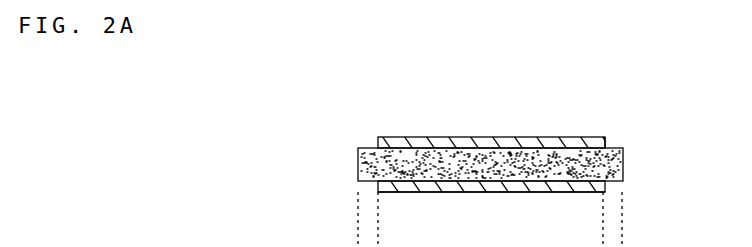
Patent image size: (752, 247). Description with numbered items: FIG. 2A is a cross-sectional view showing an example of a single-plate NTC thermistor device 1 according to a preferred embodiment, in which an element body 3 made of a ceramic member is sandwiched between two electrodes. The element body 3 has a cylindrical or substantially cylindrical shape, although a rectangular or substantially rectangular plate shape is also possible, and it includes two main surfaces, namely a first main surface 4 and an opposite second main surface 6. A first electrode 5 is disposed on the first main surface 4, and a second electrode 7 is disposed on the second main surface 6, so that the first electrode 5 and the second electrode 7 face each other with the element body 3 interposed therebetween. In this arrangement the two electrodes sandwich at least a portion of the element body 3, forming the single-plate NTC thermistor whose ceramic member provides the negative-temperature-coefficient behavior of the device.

The single-plate NTC thermistor device 1 is at (610, 120).
The element body 3 is at (614, 160).
The first main surface 4 is at (606, 143).
The first electrode 5 is at (505, 146).
The second main surface 6 is at (606, 188).
The second electrode 7 is at (530, 193).